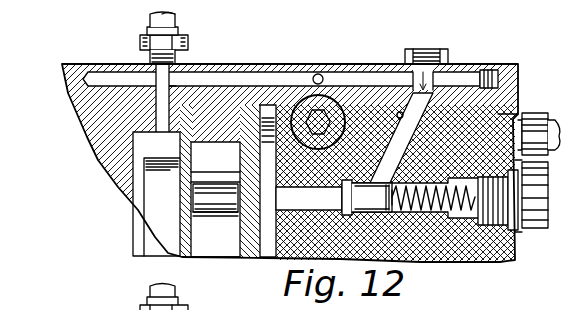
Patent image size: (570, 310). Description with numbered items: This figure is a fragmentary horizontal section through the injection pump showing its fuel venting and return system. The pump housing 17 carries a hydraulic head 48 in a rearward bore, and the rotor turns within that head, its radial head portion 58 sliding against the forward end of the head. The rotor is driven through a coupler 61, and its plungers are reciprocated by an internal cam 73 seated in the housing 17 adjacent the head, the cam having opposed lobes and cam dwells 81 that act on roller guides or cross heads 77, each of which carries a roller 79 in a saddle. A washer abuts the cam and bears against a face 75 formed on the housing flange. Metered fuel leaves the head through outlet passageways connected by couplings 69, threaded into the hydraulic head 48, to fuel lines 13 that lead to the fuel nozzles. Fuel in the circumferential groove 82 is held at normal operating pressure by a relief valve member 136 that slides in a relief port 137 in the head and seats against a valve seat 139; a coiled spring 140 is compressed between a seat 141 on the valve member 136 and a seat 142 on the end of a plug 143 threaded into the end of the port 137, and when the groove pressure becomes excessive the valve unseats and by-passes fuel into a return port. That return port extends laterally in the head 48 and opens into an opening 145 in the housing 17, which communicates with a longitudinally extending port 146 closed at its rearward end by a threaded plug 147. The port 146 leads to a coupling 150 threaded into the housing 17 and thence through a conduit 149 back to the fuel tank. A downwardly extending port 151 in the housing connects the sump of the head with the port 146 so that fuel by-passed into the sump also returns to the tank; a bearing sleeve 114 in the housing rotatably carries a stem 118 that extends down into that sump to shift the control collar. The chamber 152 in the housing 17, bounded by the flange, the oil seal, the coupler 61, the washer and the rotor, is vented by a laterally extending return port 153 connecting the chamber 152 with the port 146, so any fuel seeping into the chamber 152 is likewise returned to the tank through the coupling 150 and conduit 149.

The fuel lines 13 is at (560, 120).
The housing 17 is at (90, 138).
The hydraulic head 48 is at (250, 165).
The radial head portion 58 is at (215, 257).
The coupler 61 is at (162, 215).
The couplings 69 is at (540, 113).
The internal cam 73 is at (222, 148).
The face 75 is at (178, 183).
The roller guides 77 is at (205, 222).
The roller 79 is at (228, 200).
The cam dwells 81 is at (268, 220).
The circumferential groove 82 is at (268, 125).
The bearing sleeve 114 is at (318, 118).
The stem 118 is at (313, 116).
The piston 136 is at (367, 197).
The relief port 137 is at (309, 198).
The valve seat 139 is at (330, 196).
The coiled spring 140 is at (457, 218).
The seat 141 is at (380, 197).
The seat 142 is at (487, 225).
The plug 143 is at (510, 230).
The opening 145 is at (418, 82).
The longitudinally extending port 146 is at (281, 79).
The threaded plug 147 is at (480, 80).
The conduit 149 is at (177, 24).
The coupling 150 is at (140, 42).
The downwardly extending port 151 is at (323, 82).
The chamber 152 is at (156, 160).
The return port 153 is at (184, 79).